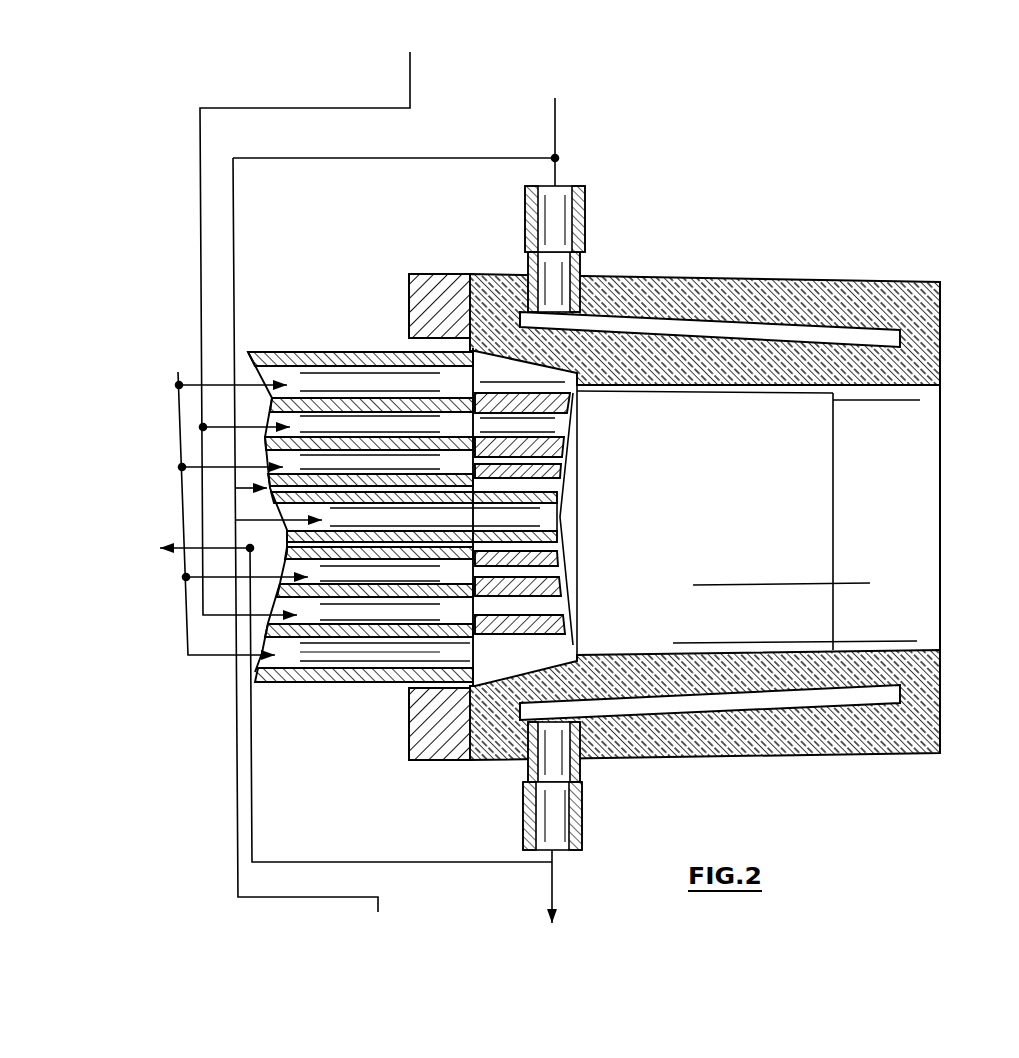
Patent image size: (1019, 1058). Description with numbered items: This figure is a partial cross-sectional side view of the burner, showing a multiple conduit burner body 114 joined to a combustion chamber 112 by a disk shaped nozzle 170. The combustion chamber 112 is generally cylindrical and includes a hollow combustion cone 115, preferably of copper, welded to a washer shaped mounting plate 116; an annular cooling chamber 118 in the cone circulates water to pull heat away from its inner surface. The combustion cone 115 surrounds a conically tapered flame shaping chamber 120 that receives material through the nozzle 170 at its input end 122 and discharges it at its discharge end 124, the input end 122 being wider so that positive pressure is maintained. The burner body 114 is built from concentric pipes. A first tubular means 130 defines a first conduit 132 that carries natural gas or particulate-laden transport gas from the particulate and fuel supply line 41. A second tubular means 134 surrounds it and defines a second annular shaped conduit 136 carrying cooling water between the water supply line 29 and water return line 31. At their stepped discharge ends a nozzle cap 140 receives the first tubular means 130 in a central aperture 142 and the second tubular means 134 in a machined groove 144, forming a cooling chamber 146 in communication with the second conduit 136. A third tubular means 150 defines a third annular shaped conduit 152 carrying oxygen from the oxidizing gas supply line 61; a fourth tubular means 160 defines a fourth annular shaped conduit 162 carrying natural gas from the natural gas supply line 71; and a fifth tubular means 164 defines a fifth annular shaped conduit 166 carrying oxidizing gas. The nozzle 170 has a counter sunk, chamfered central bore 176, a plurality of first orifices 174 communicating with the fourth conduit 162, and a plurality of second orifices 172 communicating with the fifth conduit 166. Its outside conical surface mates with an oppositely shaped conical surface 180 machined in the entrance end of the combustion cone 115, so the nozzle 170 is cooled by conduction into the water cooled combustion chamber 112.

The water supply line 29 is at (557, 115).
The water return line 31 is at (553, 890).
The particulate and fuel supply line 41 is at (380, 908).
The oxidizing gas supply line 61 is at (178, 372).
The natural gas supply line 71 is at (413, 80).
The combustion chamber 112 is at (814, 274).
The multiple conduit burner body 114 is at (291, 342).
The combustion cone 115 is at (737, 758).
The mounting plate 116 is at (445, 760).
The annular cooling chamber 118 is at (872, 338).
The flame shaping chamber 120 is at (913, 431).
The input end 122 is at (675, 388).
The discharge end 124 is at (940, 389).
The first tubular means 130 is at (552, 530).
The first conduit 132 is at (550, 512).
The second tubular means 134 is at (386, 478).
The second annular shaped conduit 136 is at (287, 500).
The nozzle cap 140 is at (560, 478).
The central aperture 142 is at (556, 546).
The machined groove 144 is at (473, 470).
The cooling chamber 146 is at (558, 565).
The third tubular means 150 is at (402, 595).
The third annular shaped conduit 152 is at (345, 580).
The fourth tubular means 160 is at (272, 684).
The fourth annular shaped conduit 162 is at (320, 615).
The fifth tubular means 164 is at (340, 677).
The fifth annular shaped conduit 166 is at (407, 657).
The nozzle 170 is at (578, 607).
The second orifices 172 is at (578, 386).
The first orifices 174 is at (580, 620).
The central bore 176 is at (566, 450).
The conical surface 180 is at (590, 652).